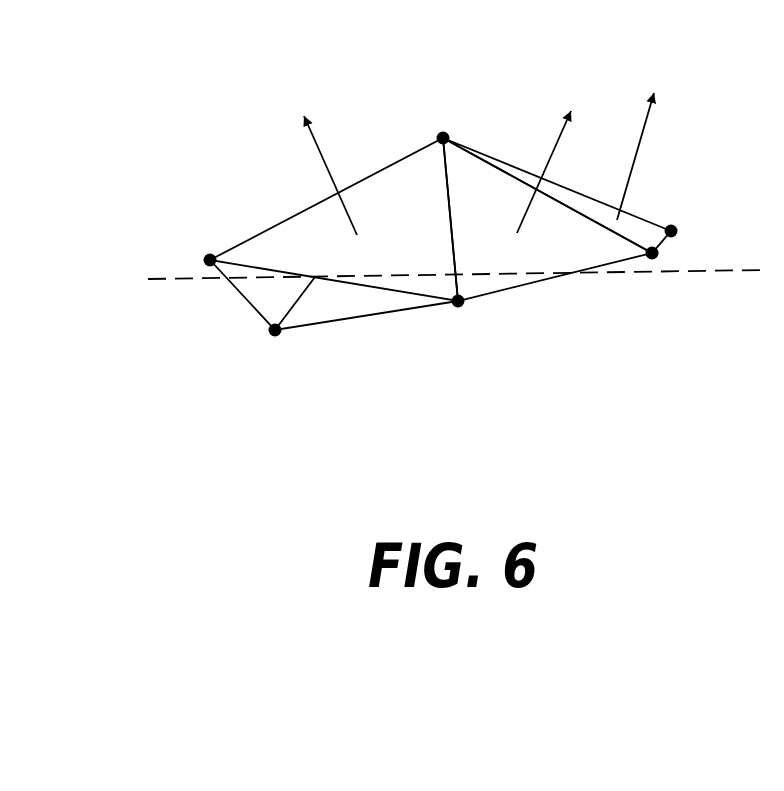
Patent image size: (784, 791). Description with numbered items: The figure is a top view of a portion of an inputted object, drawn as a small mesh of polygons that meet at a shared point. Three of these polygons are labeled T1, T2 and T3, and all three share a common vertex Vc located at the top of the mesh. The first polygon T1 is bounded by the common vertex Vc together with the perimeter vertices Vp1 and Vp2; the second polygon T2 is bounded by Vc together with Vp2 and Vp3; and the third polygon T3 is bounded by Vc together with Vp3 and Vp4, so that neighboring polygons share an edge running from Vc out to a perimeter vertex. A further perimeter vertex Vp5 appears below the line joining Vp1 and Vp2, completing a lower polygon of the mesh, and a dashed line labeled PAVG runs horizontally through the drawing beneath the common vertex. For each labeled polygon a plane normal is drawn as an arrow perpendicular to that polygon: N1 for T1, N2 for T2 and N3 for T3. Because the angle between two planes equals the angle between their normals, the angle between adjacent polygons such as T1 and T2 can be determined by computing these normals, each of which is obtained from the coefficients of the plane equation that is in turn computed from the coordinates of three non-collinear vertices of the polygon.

The common vertex Vc is at (445, 136).
The polygon vertex Vp1 is at (210, 258).
The polygon vertex Vp2 is at (458, 305).
The polygon vertex Vp3 is at (655, 258).
The polygon vertex Vp4 is at (676, 231).
The perimeter vertex 5 Vp5 is at (278, 333).
The polygon T1 is at (334, 219).
The polygon T2 is at (547, 219).
The polygon T3 is at (642, 230).
The plane normal N1 is at (320, 150).
The plane normal N2 is at (549, 147).
The plane normal N3 is at (637, 148).
The average plane PAVG is at (150, 279).